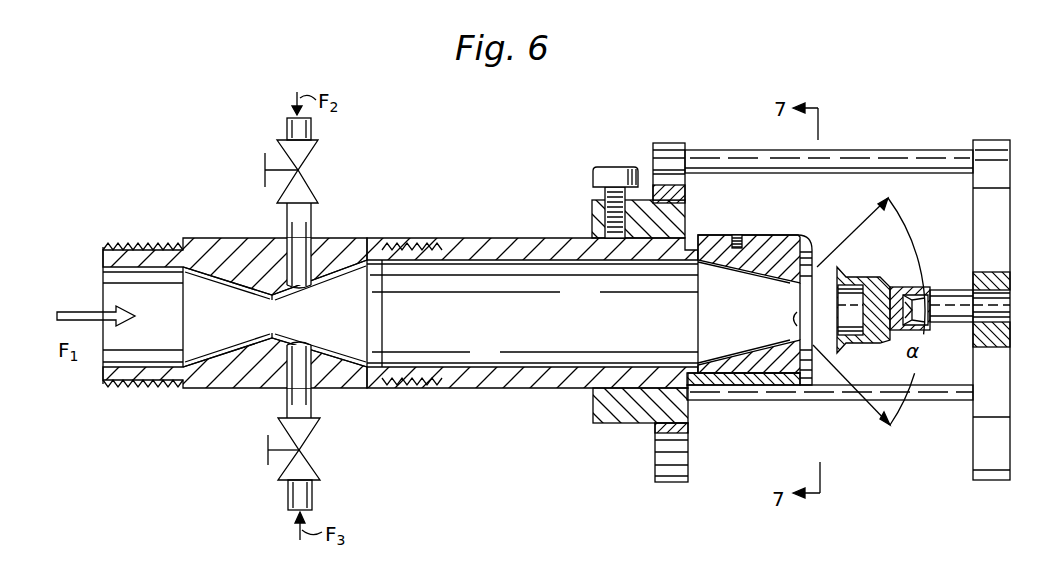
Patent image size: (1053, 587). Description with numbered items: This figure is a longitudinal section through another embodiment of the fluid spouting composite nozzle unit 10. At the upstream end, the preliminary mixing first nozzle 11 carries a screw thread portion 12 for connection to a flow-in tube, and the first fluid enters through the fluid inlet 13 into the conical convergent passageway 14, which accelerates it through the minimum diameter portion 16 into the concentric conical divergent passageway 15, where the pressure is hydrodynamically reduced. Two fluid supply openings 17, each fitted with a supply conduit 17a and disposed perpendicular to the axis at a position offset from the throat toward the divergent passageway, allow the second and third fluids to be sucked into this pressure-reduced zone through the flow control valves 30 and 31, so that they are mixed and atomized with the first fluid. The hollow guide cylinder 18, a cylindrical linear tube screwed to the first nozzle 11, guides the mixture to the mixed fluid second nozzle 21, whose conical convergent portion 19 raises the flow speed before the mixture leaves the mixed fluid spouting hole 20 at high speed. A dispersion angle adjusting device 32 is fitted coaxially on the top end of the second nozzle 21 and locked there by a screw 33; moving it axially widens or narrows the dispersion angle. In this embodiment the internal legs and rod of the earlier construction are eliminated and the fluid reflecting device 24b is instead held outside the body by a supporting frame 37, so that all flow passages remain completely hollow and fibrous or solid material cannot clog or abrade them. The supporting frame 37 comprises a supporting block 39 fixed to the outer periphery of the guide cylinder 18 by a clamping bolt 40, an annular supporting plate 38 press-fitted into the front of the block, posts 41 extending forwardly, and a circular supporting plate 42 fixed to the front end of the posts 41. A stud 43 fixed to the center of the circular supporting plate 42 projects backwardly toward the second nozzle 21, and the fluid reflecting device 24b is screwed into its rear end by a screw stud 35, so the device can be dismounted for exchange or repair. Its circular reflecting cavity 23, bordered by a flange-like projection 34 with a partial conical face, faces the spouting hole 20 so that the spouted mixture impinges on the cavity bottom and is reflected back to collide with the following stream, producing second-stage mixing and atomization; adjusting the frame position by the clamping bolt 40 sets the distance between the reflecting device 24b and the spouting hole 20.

The composite nozzle unit 10 is at (506, 396).
The preliminary mixing first nozzle 11 is at (232, 384).
The screw thread portion 12 is at (150, 388).
The fluid inlet 13 is at (110, 340).
The conical convergent passageway 14 is at (204, 338).
The conical divergent passageway 15 is at (360, 320).
The minimum diameter portion 16 is at (274, 336).
The fluid supply opening 17 is at (322, 282).
The supply conduit 17a is at (316, 230).
The hollow guide cylinder 18 is at (498, 245).
The conical convergent portion 19 is at (712, 350).
The mixed fluid spouting hole 20 is at (798, 325).
The mixed fluid second nozzle 21 is at (747, 377).
The circular reflecting cavity 23 is at (852, 330).
The fluid reflecting device 24b is at (885, 283).
The flow control valve 30 is at (262, 170).
The flow control valve 31 is at (268, 462).
The dispersion angle adjusting device 32 is at (785, 240).
The screw 33 is at (737, 235).
The flange-like projection 34 is at (847, 273).
The screw stud 35 is at (922, 333).
The supporting frame 37 is at (883, 149).
The annular supporting plate 38 is at (668, 143).
The supporting block 39 is at (592, 215).
The clamping bolt 40 is at (617, 167).
The posts 41 is at (944, 157).
The circular supporting plate 42 is at (993, 150).
The stud 43 is at (957, 322).